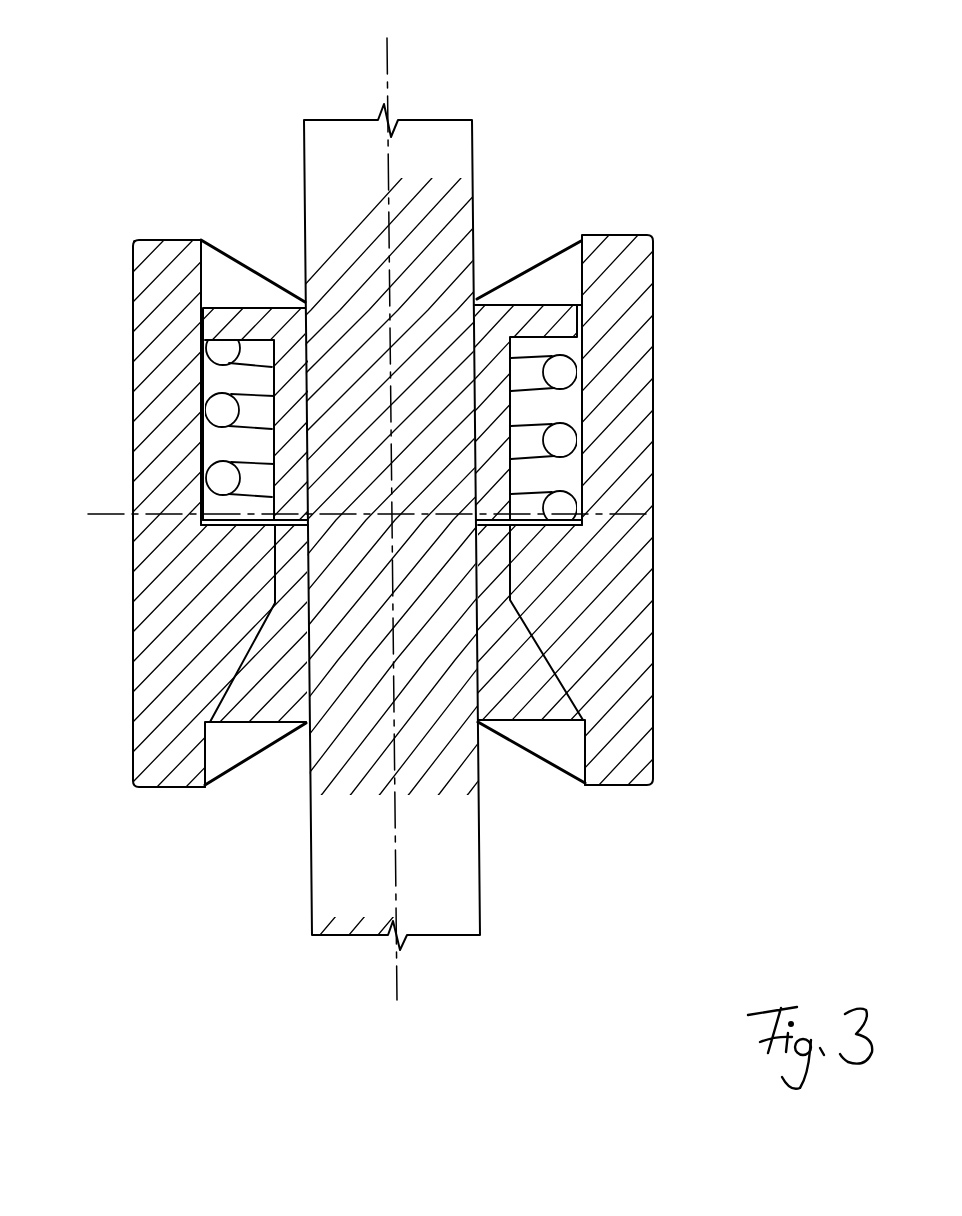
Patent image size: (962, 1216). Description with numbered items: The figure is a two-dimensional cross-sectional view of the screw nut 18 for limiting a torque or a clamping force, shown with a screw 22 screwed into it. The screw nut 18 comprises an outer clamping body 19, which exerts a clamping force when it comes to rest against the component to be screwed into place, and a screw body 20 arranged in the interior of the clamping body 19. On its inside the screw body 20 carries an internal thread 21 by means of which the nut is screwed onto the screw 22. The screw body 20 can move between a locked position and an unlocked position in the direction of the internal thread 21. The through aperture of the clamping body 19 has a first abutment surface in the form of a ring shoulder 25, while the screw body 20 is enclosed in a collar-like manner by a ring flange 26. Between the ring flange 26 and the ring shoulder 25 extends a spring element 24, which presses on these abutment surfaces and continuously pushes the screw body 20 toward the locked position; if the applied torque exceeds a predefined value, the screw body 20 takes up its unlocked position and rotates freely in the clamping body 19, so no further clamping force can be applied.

The screw nut 18 is at (121, 837).
The clamping body 19 is at (638, 572).
The screw body 20 is at (529, 683).
The internal thread 21 is at (307, 648).
The screw 22 is at (453, 173).
The spring element 24 is at (563, 373).
The ring shoulder 25 is at (233, 527).
The ring flange 26 is at (557, 325).